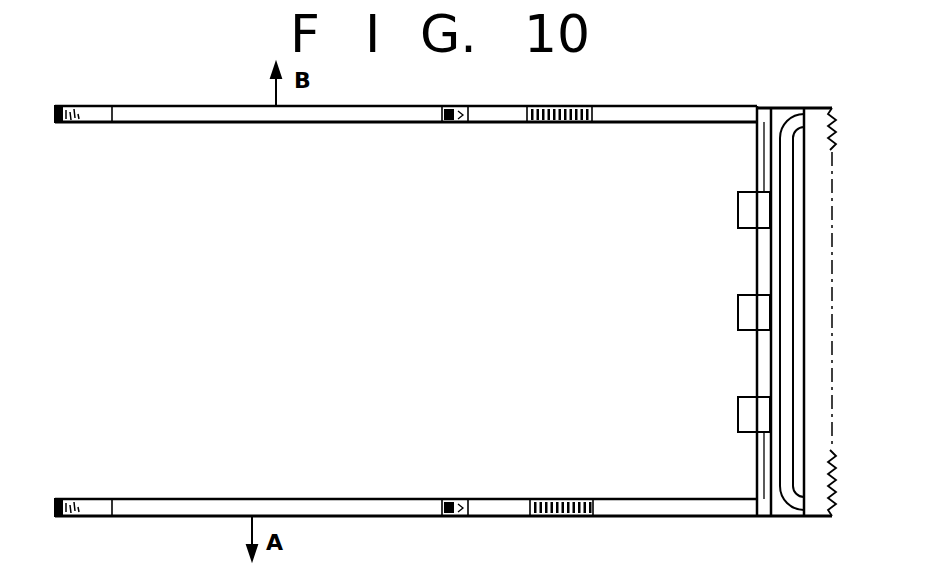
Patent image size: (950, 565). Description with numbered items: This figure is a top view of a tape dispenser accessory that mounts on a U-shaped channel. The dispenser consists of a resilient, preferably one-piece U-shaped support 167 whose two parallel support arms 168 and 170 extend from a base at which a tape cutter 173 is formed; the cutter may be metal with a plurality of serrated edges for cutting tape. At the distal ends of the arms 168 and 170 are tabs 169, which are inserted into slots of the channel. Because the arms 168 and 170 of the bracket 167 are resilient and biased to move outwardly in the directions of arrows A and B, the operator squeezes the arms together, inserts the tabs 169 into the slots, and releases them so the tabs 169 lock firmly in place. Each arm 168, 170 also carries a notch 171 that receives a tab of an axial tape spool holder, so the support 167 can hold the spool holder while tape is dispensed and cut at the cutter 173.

The U-shaped support 167 is at (198, 99).
The support arm 168 is at (638, 125).
The tab 169 is at (80, 118).
The support arm 170 is at (673, 503).
The notch 171 is at (455, 125).
The tape cutter 173 is at (818, 517).